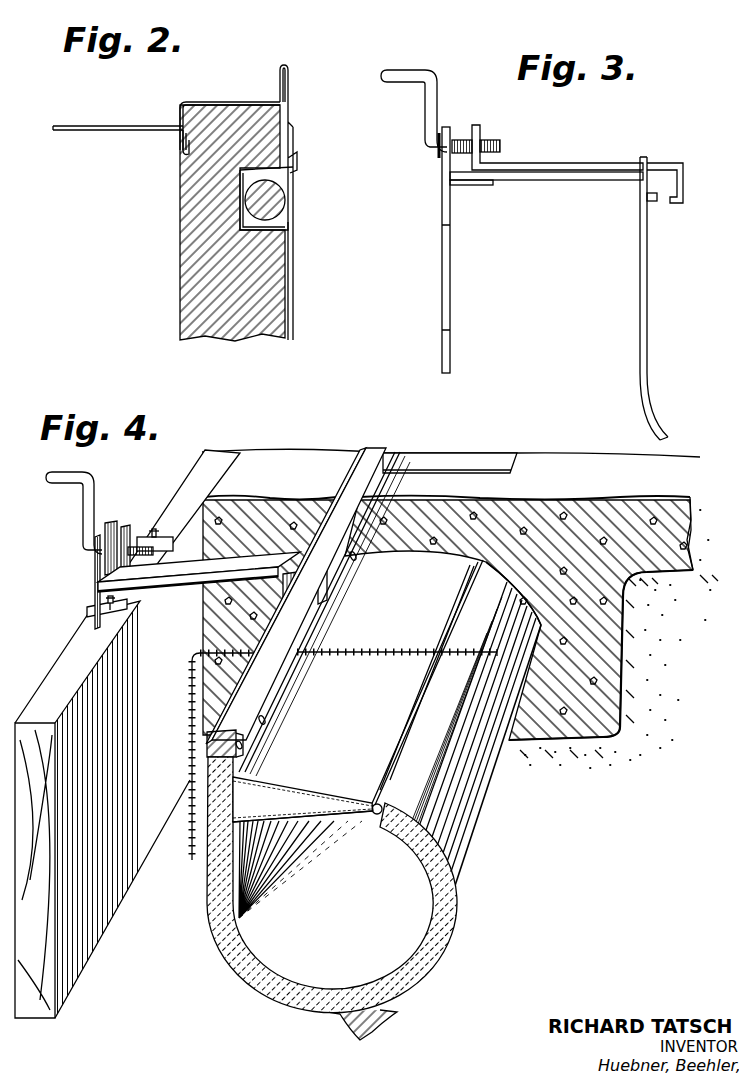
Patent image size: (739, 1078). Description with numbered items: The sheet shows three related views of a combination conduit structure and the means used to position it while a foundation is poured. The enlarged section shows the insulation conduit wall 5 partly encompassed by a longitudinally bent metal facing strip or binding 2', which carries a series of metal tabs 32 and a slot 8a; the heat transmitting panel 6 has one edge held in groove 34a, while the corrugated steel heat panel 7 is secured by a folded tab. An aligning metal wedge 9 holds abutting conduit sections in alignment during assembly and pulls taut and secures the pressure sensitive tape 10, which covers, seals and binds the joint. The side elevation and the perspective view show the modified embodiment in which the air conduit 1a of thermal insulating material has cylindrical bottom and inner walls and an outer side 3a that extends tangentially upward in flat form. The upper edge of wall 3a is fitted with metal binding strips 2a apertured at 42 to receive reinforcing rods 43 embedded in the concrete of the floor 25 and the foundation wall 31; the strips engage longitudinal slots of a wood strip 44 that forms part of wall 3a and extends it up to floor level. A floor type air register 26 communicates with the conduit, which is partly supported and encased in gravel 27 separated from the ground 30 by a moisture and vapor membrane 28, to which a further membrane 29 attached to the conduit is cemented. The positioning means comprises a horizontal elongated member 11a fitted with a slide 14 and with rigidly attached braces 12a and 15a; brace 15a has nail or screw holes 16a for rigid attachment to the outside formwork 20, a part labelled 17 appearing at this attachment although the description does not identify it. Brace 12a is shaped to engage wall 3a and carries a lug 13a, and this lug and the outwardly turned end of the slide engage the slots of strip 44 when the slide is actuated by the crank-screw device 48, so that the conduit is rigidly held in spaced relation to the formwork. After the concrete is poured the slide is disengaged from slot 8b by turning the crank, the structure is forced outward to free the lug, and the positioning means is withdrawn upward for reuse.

In FIG. 4, the air conduit 1a is at (390, 739).
In FIG. 2, the metal facing strip 2' is at (230, 110).
In FIG. 4, the metal binding strips 2a is at (252, 757).
In FIG. 4, the outer side wall 3a is at (213, 883).
In FIG. 2, the insulation conduit wall 5 is at (195, 283).
In FIG. 2, the heat transmitting panel 6 is at (97, 132).
In FIG. 4, the heat transmitting panel 6 is at (330, 823).
In FIG. 4, the heat transmitting panel 7 is at (287, 785).
In FIG. 2, the slot 8a is at (291, 236).
In FIG. 4, the slot 8b is at (272, 671).
In FIG. 2, the aligning metal wedge 9 is at (287, 200).
In FIG. 2, the pressure sensitive tape 10 is at (298, 165).
In FIG. 3, the horizontal elongated member 11a is at (550, 181).
In FIG. 4, the horizontal elongated member 11a is at (186, 587).
In FIG. 3, the brace 12a is at (640, 280).
In FIG. 4, the brace 12a is at (300, 582).
In FIG. 3, the lug 13a is at (657, 200).
In FIG. 3, the top bar 14 is at (565, 163).
In FIG. 3, the brace 15a is at (442, 280).
In FIG. 3, the nail or screw holes 16a is at (455, 225).
In FIG. 4, the nail or screw holes 16a is at (112, 622).
In FIG. 4, the bolt 17 is at (116, 603).
In FIG. 4, the foundation wall formwork 20 is at (67, 995).
In FIG. 4, the concrete floor 25 is at (570, 497).
In FIG. 4, the floor type air register 26 is at (518, 460).
In FIG. 4, the particulate material 27 is at (605, 640).
In FIG. 4, the moisture and vapor membrane 28 is at (695, 570).
In FIG. 4, the membrane 29 is at (573, 745).
In FIG. 4, the ground 30 is at (600, 742).
In FIG. 4, the foundation wall 31 is at (300, 497).
In FIG. 2, the metal tabs 32 is at (277, 73).
In FIG. 2, the groove 34a is at (180, 148).
In FIG. 4, the apertures 42 is at (265, 722).
In FIG. 4, the reinforcing rods 43 is at (362, 657).
In FIG. 4, the wood strip 44 is at (245, 700).
In FIG. 3, the crank-screw device 48 is at (440, 100).
In FIG. 4, the crank-screw device 48 is at (82, 509).